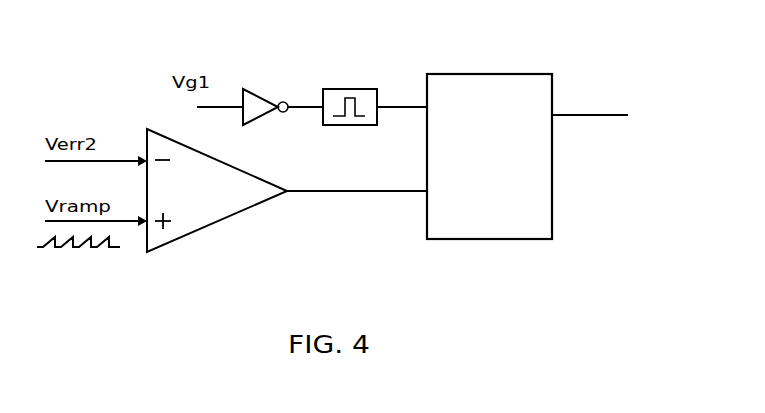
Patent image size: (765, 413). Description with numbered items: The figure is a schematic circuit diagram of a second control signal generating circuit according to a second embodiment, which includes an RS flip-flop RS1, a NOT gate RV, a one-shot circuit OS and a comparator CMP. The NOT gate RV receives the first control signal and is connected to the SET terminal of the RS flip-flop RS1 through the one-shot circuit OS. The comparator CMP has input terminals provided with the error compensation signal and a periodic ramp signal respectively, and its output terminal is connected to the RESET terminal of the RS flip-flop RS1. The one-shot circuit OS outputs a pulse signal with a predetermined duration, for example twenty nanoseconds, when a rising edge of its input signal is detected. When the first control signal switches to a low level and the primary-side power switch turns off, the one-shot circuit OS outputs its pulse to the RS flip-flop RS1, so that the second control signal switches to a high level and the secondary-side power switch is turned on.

The NOT gate RV is at (261, 93).
The one-shot circuit OS is at (348, 89).
The RS flip-flop RS1 is at (477, 74).
The comparator CMP is at (287, 190).